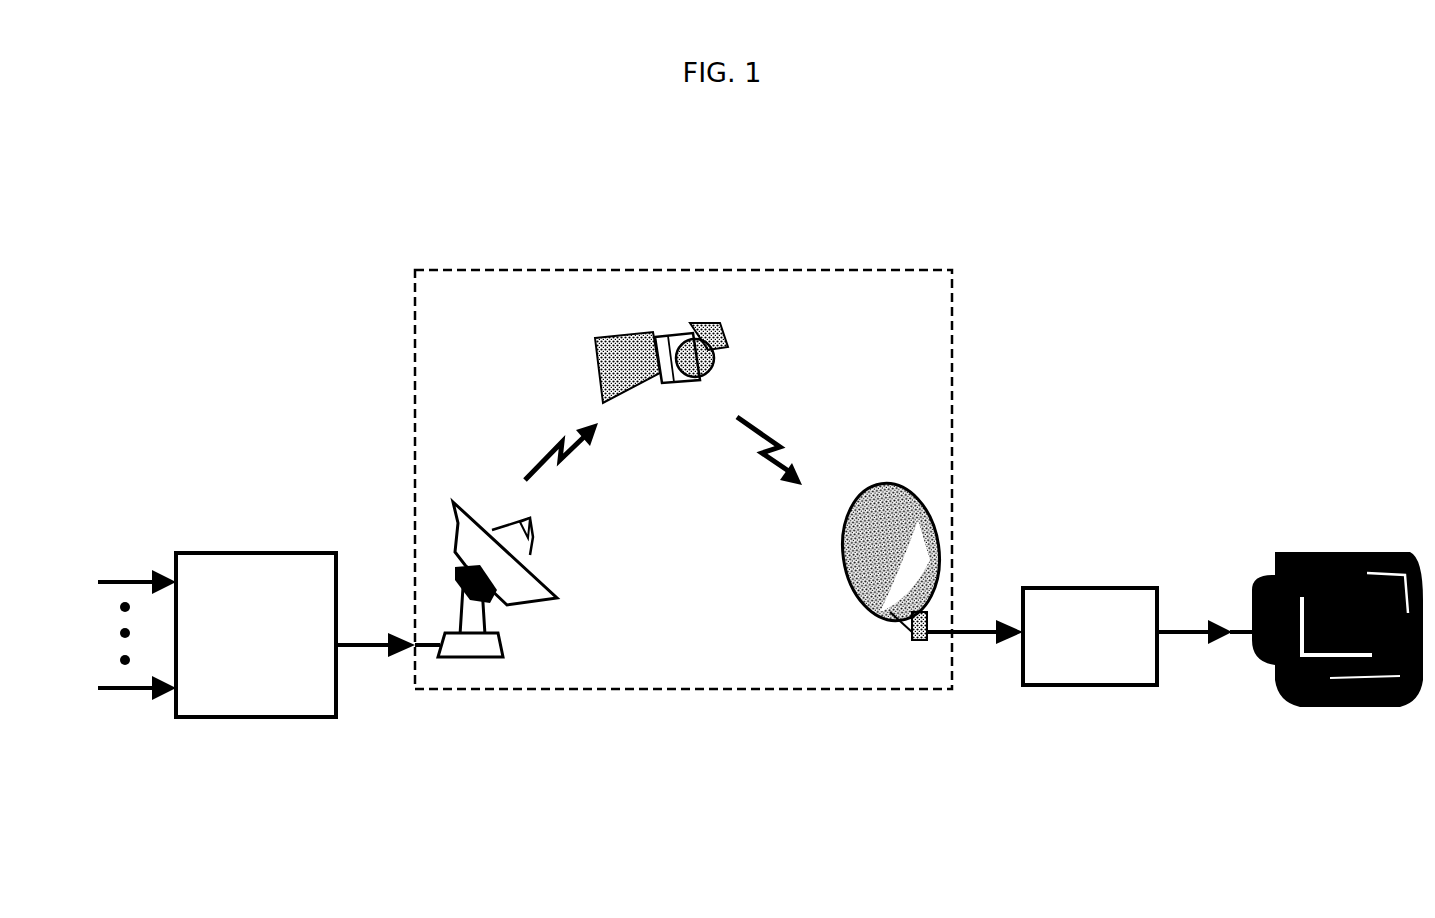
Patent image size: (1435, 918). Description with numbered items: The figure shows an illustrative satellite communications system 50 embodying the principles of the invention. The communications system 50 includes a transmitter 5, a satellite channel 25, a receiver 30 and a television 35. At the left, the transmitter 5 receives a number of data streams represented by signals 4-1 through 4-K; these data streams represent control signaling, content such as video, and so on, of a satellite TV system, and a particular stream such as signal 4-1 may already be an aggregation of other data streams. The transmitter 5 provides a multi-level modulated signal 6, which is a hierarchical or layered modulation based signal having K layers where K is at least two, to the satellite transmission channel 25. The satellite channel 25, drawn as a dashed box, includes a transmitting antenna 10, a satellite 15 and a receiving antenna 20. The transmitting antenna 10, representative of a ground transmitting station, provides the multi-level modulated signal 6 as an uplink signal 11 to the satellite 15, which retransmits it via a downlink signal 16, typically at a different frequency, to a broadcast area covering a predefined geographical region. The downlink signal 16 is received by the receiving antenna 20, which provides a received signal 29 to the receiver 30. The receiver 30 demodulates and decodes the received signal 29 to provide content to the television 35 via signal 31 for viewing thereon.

The signal 4-K is at (125, 567).
The signal 4-1 is at (125, 715).
The transmitter 5 is at (243, 542).
The multi-level modulated signal 6 is at (358, 673).
The transmitting antenna 10 is at (452, 473).
The uplink signal 11 is at (582, 470).
The satellite 15 is at (750, 337).
The downlink signal 16 is at (752, 470).
The receiving antenna 20 is at (892, 475).
The satellite channel 25 is at (813, 712).
The received signal 29 is at (983, 658).
The receiver 30 is at (1113, 578).
The signal 31 is at (1212, 658).
The television 35 is at (1287, 537).
The communications system 50 is at (376, 875).